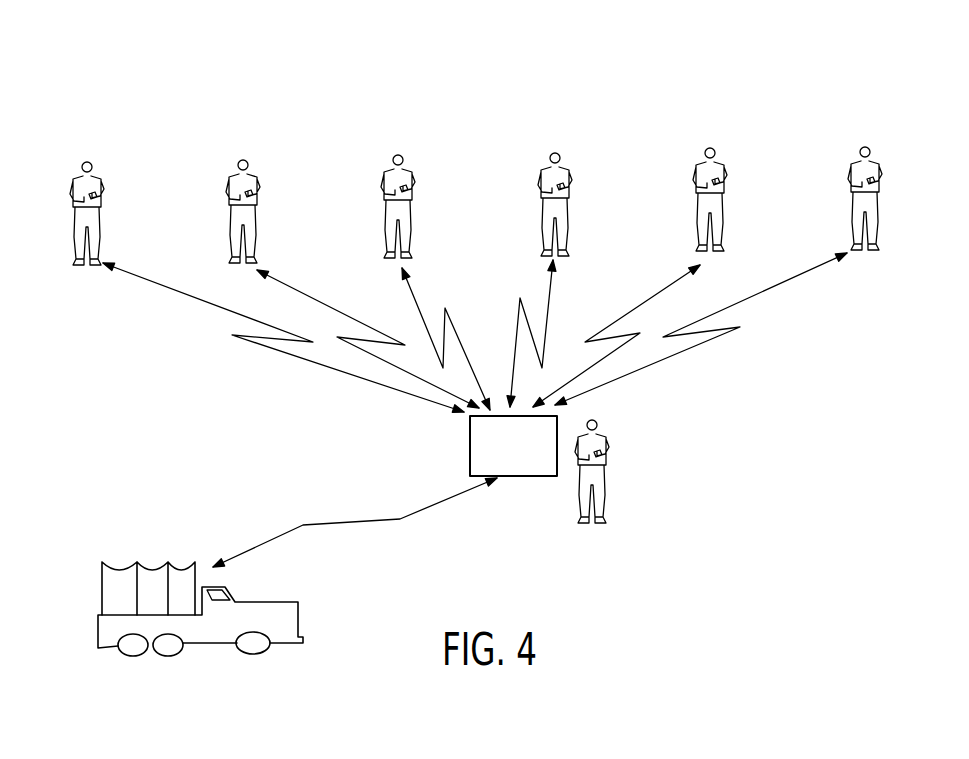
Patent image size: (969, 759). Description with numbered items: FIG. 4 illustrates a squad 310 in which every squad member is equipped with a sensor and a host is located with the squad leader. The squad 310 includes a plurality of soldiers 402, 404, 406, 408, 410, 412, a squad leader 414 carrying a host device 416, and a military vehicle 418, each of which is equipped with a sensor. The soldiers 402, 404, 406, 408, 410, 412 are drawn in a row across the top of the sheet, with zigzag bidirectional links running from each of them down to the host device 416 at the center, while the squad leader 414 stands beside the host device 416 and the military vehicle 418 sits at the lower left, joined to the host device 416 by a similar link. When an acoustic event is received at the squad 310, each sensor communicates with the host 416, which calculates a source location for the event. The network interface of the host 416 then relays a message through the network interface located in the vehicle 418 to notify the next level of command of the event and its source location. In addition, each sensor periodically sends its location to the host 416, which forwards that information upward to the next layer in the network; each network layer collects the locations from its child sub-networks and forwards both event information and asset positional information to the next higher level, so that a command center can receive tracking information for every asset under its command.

The squad 310 is at (722, 51).
The soldier 402 is at (87, 161).
The soldier 404 is at (241, 160).
The soldier 406 is at (396, 156).
The soldier 408 is at (553, 153).
The soldier 410 is at (708, 149).
The soldier 412 is at (860, 148).
The squad leader 414 is at (608, 451).
The host device 416 is at (469, 449).
The military vehicle 418 is at (124, 566).